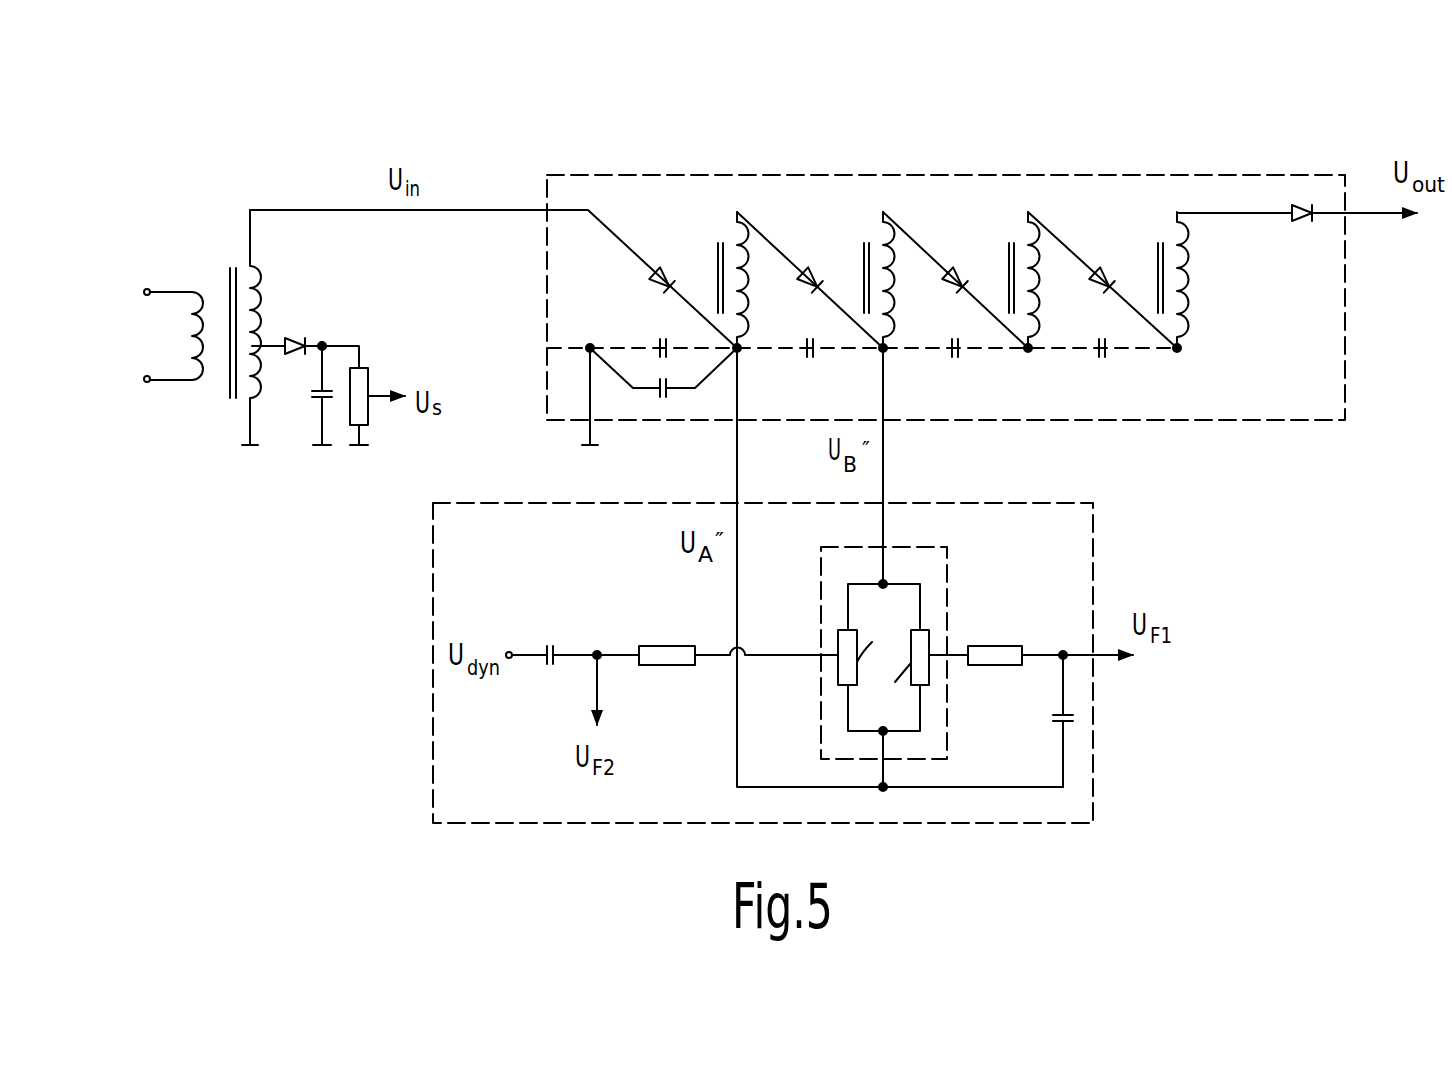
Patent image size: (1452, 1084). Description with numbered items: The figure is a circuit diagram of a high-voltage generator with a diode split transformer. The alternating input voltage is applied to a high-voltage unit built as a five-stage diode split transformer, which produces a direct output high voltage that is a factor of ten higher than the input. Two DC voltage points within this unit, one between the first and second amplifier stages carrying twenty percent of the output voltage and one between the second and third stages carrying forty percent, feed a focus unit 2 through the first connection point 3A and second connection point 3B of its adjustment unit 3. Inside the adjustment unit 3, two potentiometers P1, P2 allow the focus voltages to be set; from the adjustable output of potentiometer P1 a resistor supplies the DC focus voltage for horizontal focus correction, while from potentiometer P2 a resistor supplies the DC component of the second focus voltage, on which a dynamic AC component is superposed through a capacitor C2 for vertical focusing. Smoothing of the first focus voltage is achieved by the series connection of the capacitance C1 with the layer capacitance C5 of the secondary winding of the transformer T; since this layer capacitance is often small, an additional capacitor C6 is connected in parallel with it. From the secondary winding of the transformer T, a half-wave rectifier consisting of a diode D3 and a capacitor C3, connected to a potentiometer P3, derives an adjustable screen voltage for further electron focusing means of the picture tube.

The transformer T is at (230, 420).
The diode D3 is at (297, 335).
The potentiometer P3 is at (368, 387).
The capacitor C3 is at (312, 402).
The layer capacitance C5 is at (662, 337).
The capacitor C6 is at (663, 398).
The focus unit 2 is at (1095, 543).
The adjustment unit 3 is at (948, 613).
The first connection point 3A is at (887, 732).
The second connection point 3B is at (885, 583).
The potentiometer P1 is at (901, 677).
The potentiometer P2 is at (865, 639).
The capacitance C1 is at (1073, 719).
The capacitor C2 is at (550, 668).